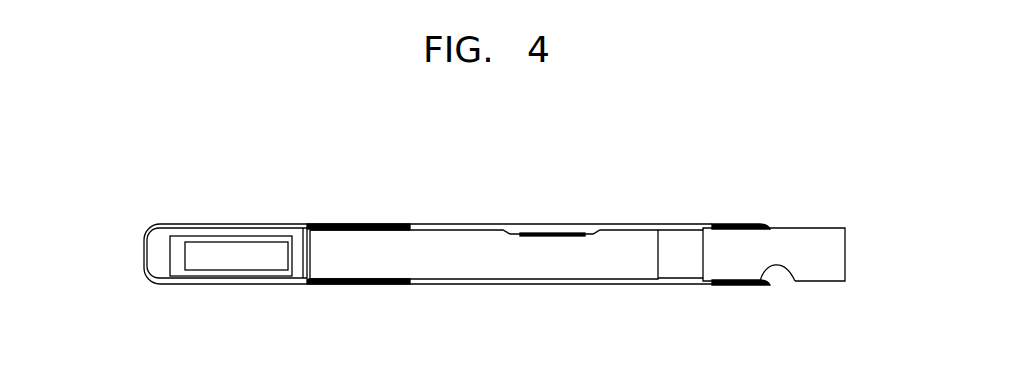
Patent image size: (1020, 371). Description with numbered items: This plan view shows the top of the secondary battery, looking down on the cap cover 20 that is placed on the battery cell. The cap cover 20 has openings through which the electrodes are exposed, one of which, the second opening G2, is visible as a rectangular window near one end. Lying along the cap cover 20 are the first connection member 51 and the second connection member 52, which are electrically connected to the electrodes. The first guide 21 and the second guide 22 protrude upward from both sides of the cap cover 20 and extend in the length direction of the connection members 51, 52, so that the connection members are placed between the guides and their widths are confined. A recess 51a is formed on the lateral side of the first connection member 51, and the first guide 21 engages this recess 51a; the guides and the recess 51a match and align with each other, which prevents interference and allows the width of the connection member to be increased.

The cap cover 20 is at (155, 254).
The second opening G2 is at (235, 273).
The second guide 22 is at (361, 224).
The second connection member 52 is at (468, 265).
The first guide 21 is at (735, 224).
The first connection member 51 is at (808, 240).
The recess 51a is at (778, 266).